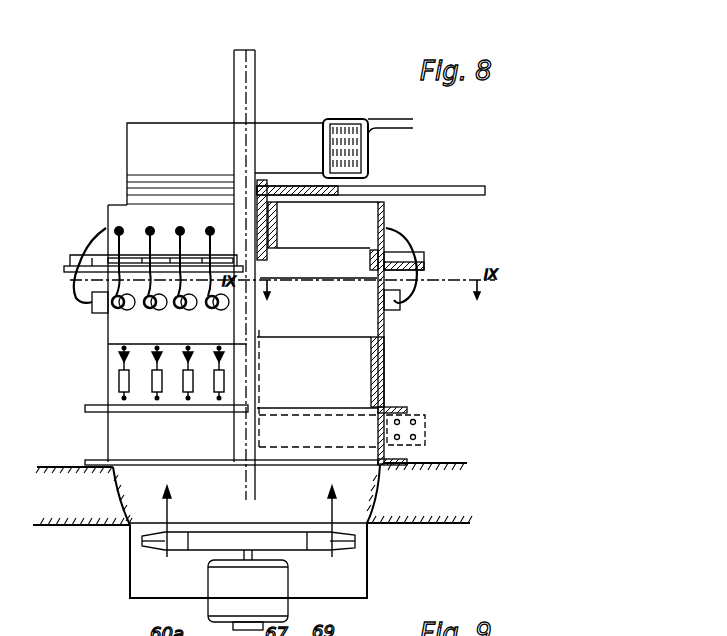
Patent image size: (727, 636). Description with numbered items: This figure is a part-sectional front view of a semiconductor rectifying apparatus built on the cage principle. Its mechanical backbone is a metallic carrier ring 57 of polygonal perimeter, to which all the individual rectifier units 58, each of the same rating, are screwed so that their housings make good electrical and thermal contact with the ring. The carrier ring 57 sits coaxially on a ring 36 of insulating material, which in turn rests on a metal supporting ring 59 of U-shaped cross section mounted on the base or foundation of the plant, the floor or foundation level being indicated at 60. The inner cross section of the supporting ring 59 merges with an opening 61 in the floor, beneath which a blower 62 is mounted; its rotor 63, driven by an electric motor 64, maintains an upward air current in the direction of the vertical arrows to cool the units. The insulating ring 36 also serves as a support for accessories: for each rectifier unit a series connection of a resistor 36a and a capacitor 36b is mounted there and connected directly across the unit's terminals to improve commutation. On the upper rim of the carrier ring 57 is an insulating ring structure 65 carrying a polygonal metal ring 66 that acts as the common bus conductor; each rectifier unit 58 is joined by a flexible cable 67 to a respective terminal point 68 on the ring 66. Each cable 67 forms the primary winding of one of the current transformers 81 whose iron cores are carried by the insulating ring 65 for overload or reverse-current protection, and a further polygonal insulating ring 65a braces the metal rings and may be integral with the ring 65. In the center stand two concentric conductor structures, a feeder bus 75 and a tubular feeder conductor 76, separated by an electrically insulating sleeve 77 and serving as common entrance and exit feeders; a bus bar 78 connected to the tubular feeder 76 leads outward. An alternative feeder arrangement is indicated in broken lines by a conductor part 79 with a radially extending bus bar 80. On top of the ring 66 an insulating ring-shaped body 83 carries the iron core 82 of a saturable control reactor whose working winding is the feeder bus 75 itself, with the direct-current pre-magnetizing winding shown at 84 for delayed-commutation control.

The feeder bus conductor 75 is at (256, 76).
The iron core of the saturable reactor 82 is at (345, 128).
The direct-current pre-magnetizing winding 84 is at (397, 120).
The bus bar 78 is at (464, 190).
The electrically insulating sleeve 77 is at (258, 215).
The tubular feeder conductor 76 is at (265, 188).
The insulating ring-shaped body 83 is at (150, 197).
The metal ring 66 is at (148, 212).
The terminal points 68 is at (150, 222).
The flexible cables 67 is at (100, 237).
The insulating ring structure 65 is at (374, 256).
The current transformers 81 is at (430, 262).
The polygonal insulating ring 65a is at (427, 266).
The rectifier units 58 is at (112, 312).
The metallic carrier ring 57 is at (122, 327).
The insulating ring 36 is at (386, 357).
The resistor 36a is at (120, 386).
The capacitor 36b is at (157, 365).
The conductor part 79 is at (260, 398).
The metal supporting ring 59 is at (110, 433).
The bus bar 80 is at (420, 427).
The ground level 60 is at (441, 464).
The opening in the floor 61 is at (358, 487).
The rotor of the blower 63 is at (352, 542).
The electric motor 64 is at (210, 580).
The blower 62 is at (320, 582).